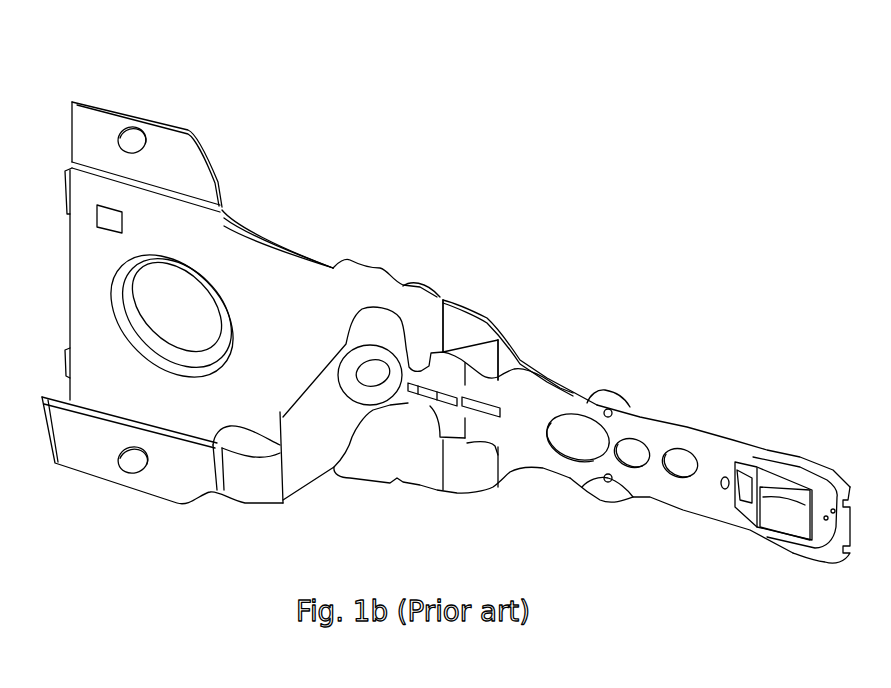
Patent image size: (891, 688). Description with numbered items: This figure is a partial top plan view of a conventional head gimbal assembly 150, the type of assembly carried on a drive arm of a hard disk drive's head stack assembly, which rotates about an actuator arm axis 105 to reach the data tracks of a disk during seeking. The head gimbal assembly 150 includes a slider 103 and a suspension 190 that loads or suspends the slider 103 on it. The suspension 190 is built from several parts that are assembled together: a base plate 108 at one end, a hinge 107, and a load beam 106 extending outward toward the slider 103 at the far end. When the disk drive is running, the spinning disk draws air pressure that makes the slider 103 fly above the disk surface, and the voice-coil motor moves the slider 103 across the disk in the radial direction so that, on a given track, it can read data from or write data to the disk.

The head gimbal assembly 150 is at (319, 303).
The suspension 190 is at (665, 214).
The base plate 108 is at (420, 287).
The hinge 107 is at (457, 320).
The load beam 106 is at (508, 358).
The actuator arm axis 105 is at (640, 430).
The slider 103 is at (783, 513).